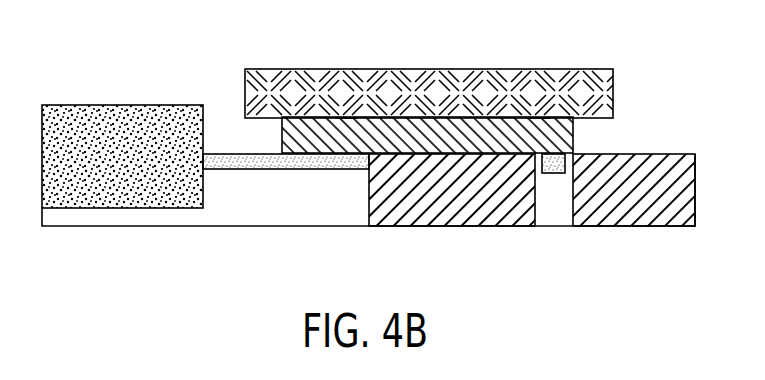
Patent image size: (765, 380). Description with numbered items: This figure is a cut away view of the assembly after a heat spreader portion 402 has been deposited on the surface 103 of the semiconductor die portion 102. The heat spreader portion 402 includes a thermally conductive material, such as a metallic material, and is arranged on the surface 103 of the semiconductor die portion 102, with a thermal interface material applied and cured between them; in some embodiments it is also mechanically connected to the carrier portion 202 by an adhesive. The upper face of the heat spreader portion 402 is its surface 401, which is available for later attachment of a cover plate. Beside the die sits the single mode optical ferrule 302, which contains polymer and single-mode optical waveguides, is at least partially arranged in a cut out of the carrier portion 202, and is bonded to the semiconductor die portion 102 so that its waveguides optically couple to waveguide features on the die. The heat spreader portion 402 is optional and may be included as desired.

The semiconductor die portion 102 is at (556, 150).
The surface of the semiconductor die portion 103 is at (345, 113).
The carrier portion 202 is at (675, 218).
The single mode optical ferrule 302 is at (105, 120).
The surface of the heat spreader portion 401 is at (537, 115).
The heat spreader portion 402 is at (502, 81).